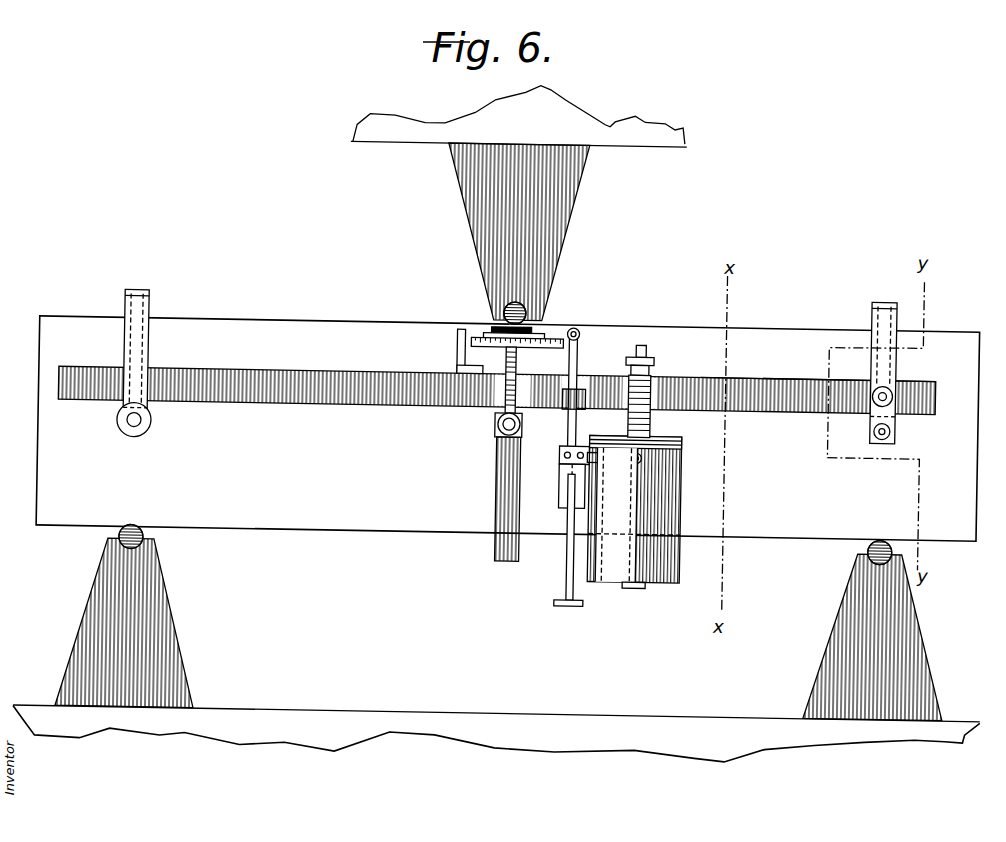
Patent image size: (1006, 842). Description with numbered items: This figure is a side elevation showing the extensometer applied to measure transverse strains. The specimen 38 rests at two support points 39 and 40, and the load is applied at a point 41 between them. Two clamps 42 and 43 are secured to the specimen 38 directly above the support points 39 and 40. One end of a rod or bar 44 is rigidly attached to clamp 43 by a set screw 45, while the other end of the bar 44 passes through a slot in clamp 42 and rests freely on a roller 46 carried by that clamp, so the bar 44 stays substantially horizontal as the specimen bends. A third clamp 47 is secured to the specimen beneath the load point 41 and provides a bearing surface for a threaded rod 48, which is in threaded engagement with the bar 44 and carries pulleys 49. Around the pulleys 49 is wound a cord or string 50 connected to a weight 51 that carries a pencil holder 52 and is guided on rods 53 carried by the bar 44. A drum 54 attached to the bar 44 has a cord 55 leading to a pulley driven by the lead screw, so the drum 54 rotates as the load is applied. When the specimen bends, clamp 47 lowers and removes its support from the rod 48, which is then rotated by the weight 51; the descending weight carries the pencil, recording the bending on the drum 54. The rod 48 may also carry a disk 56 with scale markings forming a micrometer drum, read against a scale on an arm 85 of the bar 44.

The specimen 38 is at (275, 329).
The support point 39 is at (136, 536).
The support point 40 is at (880, 534).
The load application point 41 is at (548, 312).
The clamp 42 is at (137, 344).
The clamp 43 is at (879, 361).
The rod or bar 44 is at (806, 385).
The set screw 45 is at (871, 383).
The roller 46 is at (118, 433).
The clamp 47 is at (497, 496).
The threaded rod 48 is at (516, 356).
The pulleys 49 is at (500, 323).
The cord or string 50 is at (574, 328).
The weight 51 is at (564, 476).
The pencil holder 52 is at (612, 462).
The guide rods 53 is at (569, 561).
The drum 54 is at (668, 504).
The cord 55 is at (685, 443).
The disk 56 is at (517, 346).
The arm 85 is at (457, 346).